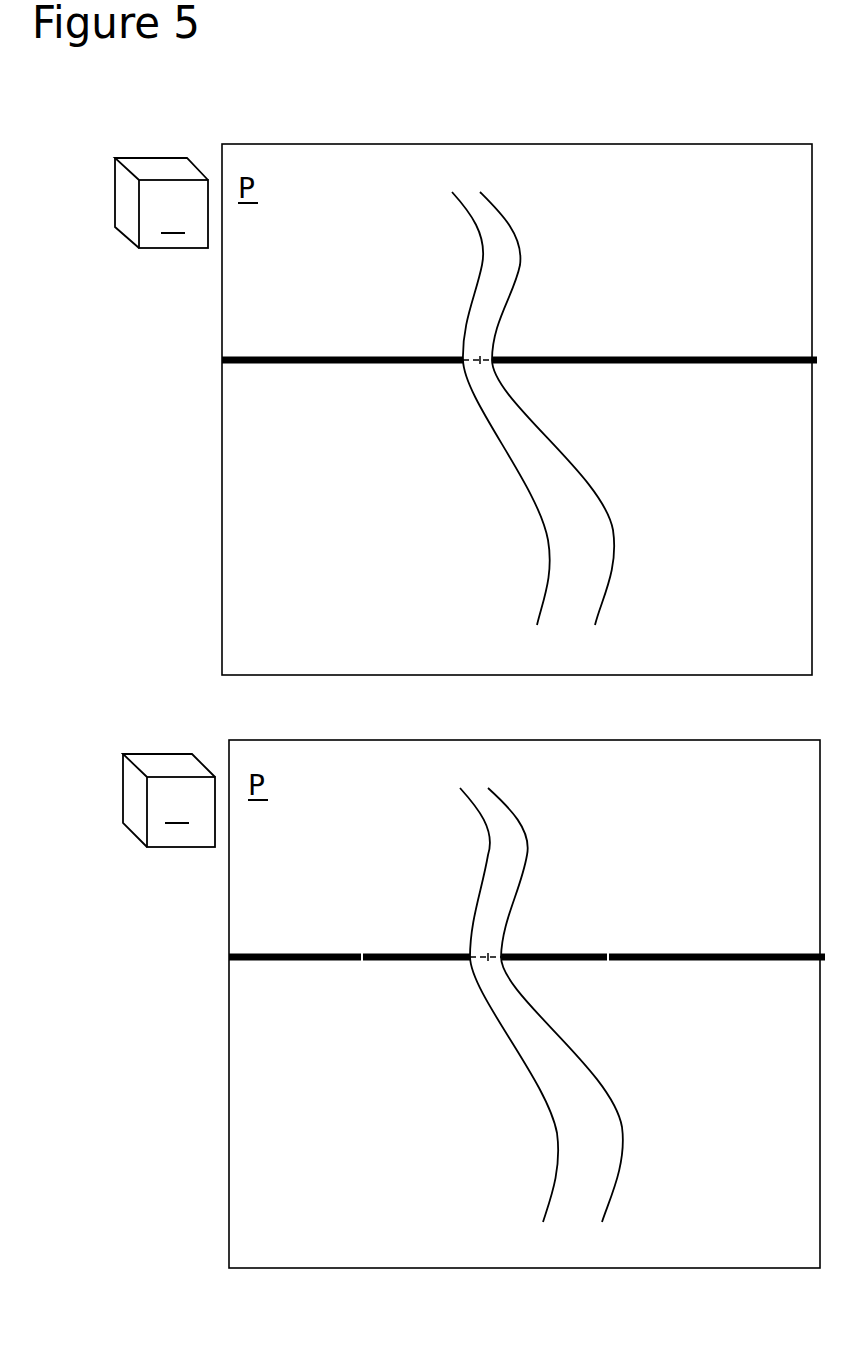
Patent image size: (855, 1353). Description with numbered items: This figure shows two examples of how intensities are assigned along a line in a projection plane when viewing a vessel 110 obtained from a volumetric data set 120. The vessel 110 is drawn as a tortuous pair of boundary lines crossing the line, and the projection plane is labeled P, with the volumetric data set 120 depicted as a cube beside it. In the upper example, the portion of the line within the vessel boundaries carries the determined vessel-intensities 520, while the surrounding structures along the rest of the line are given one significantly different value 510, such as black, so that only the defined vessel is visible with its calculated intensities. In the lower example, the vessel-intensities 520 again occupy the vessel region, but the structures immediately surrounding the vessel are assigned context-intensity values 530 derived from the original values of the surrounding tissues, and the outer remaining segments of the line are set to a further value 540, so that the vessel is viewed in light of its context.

The vessel 110 is at (566, 254).
The volumetric data set 120 is at (160, 272).
The significantly different value 510 is at (368, 360).
The vessel-intensities 520 is at (476, 340).
The context-intensity values 530 is at (436, 960).
The outer edge sub-segment 540 is at (295, 960).